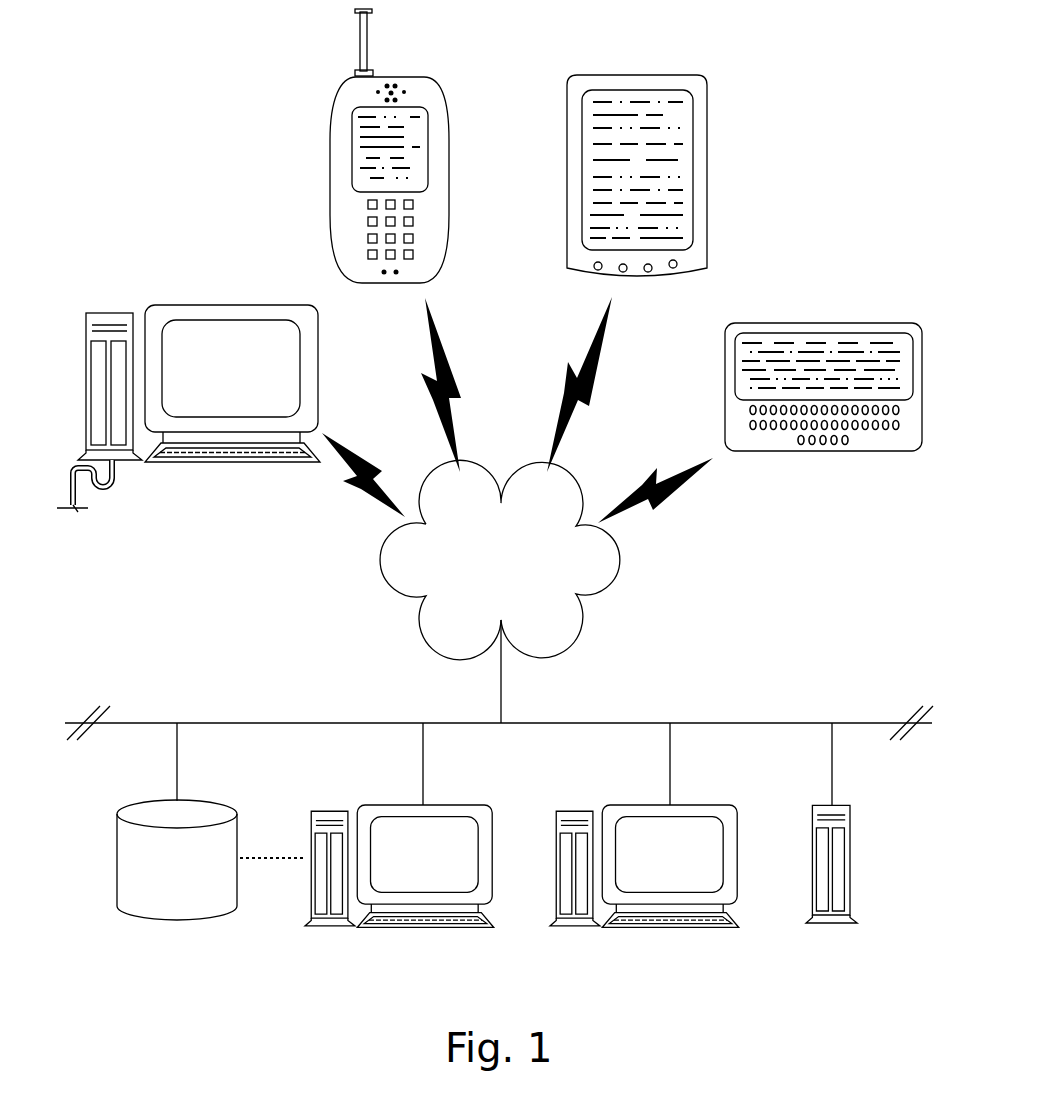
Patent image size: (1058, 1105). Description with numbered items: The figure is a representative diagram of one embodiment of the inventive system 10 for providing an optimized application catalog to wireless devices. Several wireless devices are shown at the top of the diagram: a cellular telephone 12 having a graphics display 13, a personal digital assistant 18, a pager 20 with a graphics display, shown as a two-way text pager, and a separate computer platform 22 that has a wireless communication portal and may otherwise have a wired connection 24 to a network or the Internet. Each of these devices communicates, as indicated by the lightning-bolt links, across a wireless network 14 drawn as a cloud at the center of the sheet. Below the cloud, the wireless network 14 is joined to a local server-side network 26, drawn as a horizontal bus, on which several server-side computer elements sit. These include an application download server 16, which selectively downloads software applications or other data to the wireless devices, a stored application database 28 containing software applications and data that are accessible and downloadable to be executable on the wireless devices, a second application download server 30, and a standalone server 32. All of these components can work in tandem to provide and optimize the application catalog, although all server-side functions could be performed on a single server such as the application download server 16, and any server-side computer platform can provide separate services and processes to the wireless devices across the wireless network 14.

The system 10 is at (828, 152).
The cellular telephone 12 is at (431, 77).
The graphics display 13 is at (428, 148).
The wireless network 14 is at (600, 560).
The application download server 16 is at (400, 805).
The personal digital assistant 18 is at (640, 75).
The pager 20 is at (857, 451).
The computer platform 22 is at (222, 305).
The wired connection 24 is at (124, 496).
The local server-side network 26 is at (713, 723).
The stored application database 28 is at (117, 858).
The second application download server 30 is at (655, 805).
The standalone server 32 is at (852, 840).